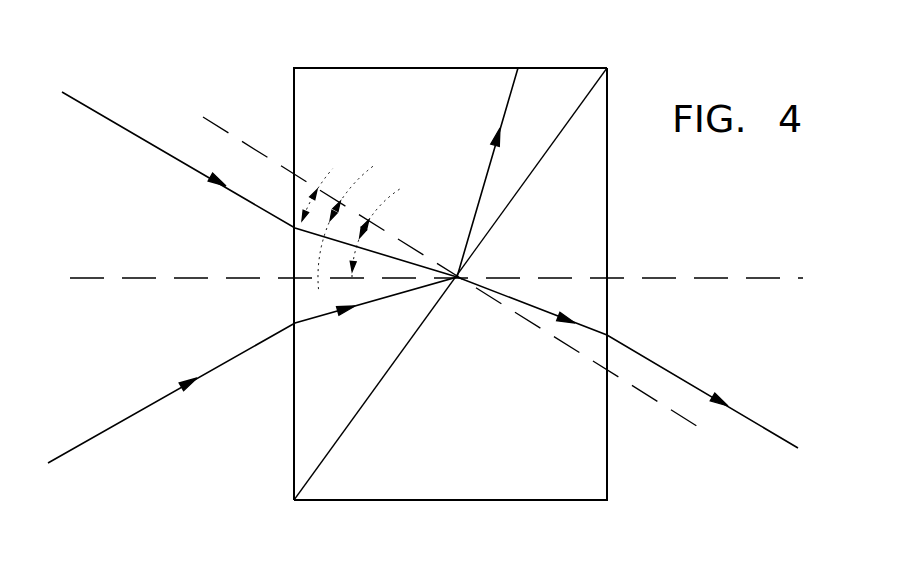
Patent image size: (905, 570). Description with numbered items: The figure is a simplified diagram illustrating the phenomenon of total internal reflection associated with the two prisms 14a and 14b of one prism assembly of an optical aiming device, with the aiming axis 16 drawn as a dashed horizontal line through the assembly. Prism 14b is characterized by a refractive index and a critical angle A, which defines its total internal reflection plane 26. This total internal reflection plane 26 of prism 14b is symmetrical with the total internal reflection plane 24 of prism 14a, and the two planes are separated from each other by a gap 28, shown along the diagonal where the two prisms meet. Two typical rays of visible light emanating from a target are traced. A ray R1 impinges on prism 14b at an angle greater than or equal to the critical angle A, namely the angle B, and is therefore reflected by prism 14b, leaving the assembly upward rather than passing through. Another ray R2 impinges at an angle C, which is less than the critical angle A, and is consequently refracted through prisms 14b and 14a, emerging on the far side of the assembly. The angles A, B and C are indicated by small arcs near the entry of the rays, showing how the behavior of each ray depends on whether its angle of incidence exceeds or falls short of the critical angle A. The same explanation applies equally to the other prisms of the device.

The prism 14a is at (511, 473).
The prism 14b is at (407, 105).
The aiming axis 16 is at (745, 278).
The total internal reflection plane 24 is at (562, 135).
The total internal reflection plane 26 is at (585, 98).
The gap 28 is at (310, 477).
The ray R1 is at (478, 28).
The ray R2 is at (430, 256).
The critical angle A is at (383, 221).
The angle B is at (354, 217).
The angle C is at (328, 181).